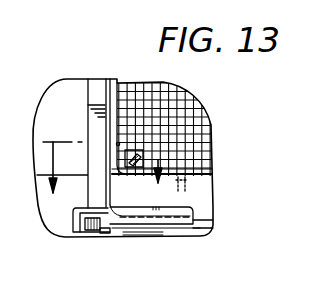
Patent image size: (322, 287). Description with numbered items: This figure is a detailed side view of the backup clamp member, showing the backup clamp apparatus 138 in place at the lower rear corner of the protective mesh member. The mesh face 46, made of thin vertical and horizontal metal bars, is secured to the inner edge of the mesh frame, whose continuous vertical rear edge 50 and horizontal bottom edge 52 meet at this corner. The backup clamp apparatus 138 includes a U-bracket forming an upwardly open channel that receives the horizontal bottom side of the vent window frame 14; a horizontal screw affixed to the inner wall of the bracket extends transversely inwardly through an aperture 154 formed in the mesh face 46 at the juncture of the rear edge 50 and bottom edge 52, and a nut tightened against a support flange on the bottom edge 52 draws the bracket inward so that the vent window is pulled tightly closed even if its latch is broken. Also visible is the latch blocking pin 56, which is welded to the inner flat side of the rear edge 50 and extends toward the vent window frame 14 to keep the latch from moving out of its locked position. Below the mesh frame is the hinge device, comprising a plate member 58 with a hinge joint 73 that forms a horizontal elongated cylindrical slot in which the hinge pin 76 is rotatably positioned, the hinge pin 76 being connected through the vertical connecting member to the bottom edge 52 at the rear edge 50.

The vent window frame 14 is at (102, 174).
The mesh face 46 is at (143, 84).
The vertical rear edge 50 is at (119, 80).
The horizontal bottom edge 52 is at (213, 176).
The latch blocking pin 56 is at (118, 144).
The plate member 58 is at (116, 232).
The hinge joint 73 is at (174, 227).
The hinge pin 76 is at (211, 227).
The backup clamp apparatus 138 is at (141, 150).
The aperture 154 is at (128, 150).